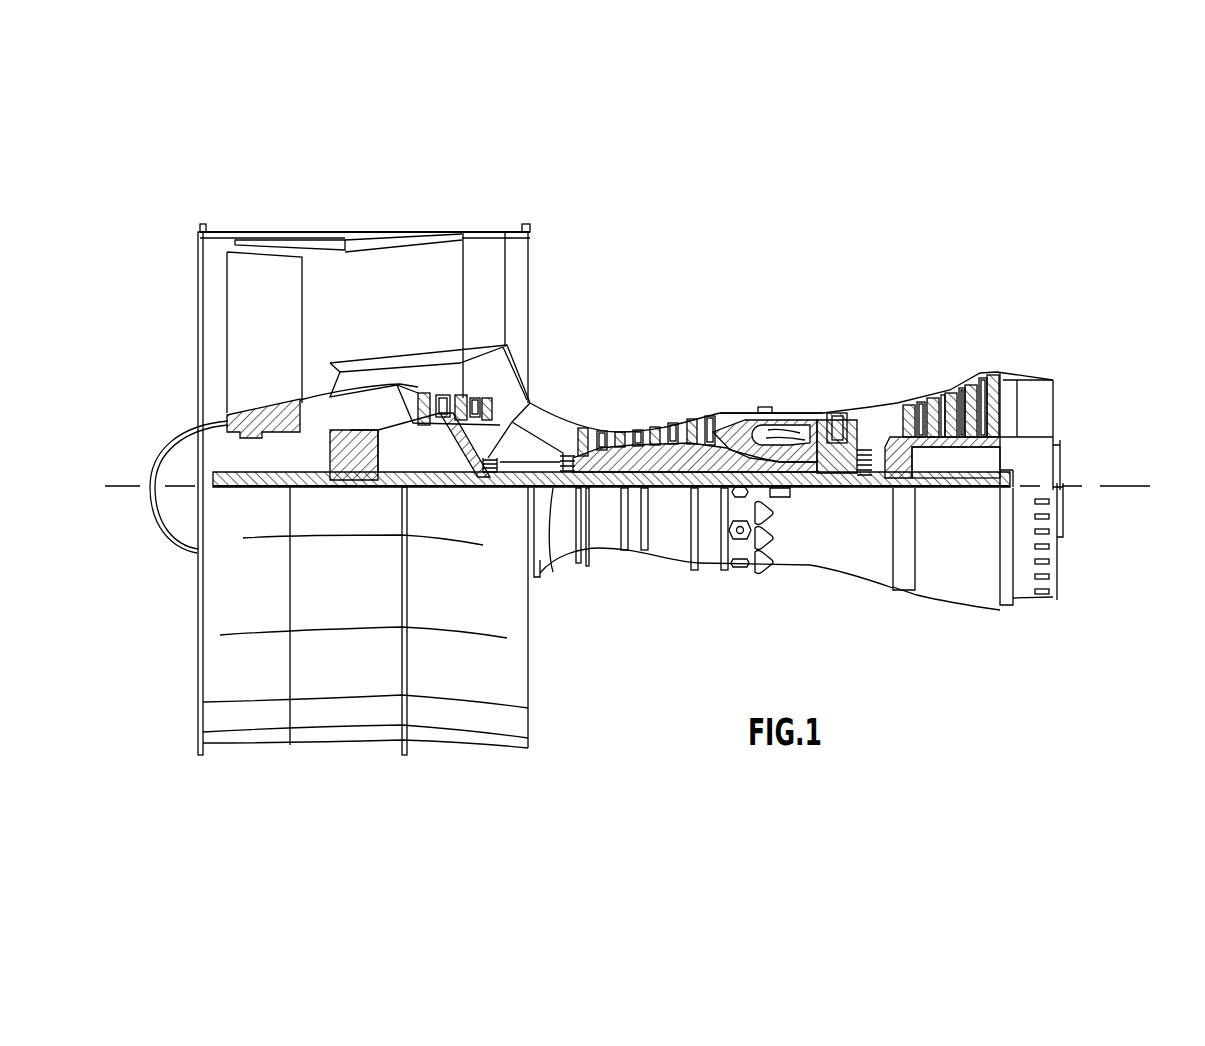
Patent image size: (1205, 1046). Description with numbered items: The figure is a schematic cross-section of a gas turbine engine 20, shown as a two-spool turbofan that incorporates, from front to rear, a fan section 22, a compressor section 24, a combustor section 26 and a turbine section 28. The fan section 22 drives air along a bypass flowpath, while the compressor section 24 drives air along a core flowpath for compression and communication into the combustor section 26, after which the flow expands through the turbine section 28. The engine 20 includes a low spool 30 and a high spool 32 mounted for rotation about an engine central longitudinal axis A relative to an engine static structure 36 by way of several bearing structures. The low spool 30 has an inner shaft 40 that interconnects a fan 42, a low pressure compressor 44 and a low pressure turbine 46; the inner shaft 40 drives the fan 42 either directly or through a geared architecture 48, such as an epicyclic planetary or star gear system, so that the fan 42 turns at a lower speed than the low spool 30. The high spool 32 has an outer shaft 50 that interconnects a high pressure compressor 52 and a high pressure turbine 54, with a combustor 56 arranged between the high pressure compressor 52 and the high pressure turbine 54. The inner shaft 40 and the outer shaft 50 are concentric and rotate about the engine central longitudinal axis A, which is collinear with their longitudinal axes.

The gas turbine engine 20 is at (786, 274).
The fan section 22 is at (298, 218).
The compressor section 24 is at (577, 401).
The combustor section 26 is at (777, 389).
The turbine section 28 is at (911, 355).
The low spool 30 is at (672, 494).
The high spool 32 is at (713, 460).
The engine static structure 36 is at (708, 573).
The inner shaft 40 is at (553, 572).
The fan 42 is at (276, 347).
The low pressure compressor 44 is at (470, 395).
The low pressure turbine 46 is at (950, 382).
The geared architecture 48 is at (368, 473).
The outer shaft 50 is at (787, 478).
The high pressure compressor 52 is at (645, 458).
The high pressure turbine 54 is at (843, 413).
The combustor 56 is at (778, 433).
The engine central longitudinal axis A is at (1140, 486).